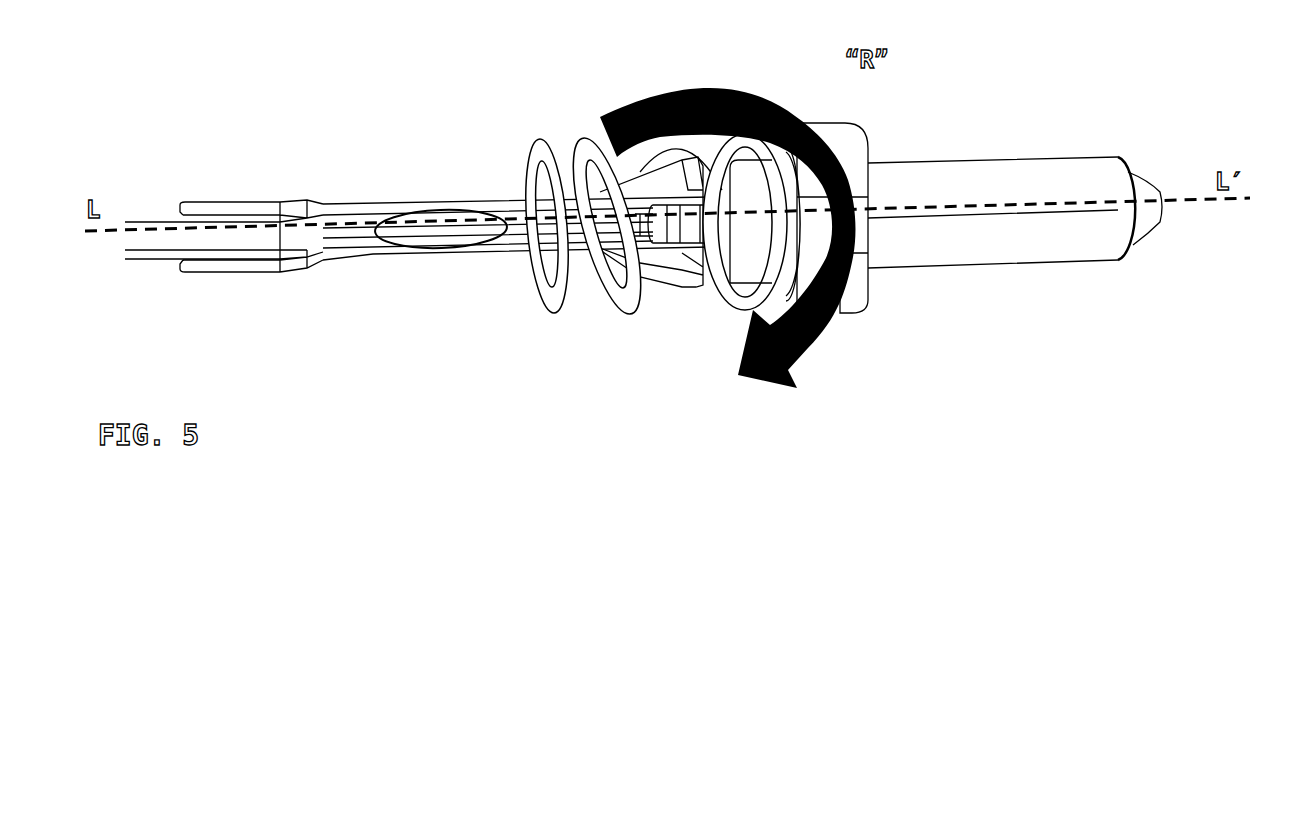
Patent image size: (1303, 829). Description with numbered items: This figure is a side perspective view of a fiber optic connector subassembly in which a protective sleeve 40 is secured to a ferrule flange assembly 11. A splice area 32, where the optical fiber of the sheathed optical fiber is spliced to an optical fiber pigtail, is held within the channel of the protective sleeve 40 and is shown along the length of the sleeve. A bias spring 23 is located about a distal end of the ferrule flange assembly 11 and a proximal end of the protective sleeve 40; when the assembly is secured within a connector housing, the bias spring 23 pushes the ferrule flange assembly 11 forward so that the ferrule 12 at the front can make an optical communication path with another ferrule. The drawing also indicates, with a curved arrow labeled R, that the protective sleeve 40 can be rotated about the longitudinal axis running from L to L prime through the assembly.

The ferrule flange assembly 11 is at (876, 295).
The ferrule 12 is at (1015, 212).
The bias spring 23 is at (581, 140).
The splice area 32 is at (446, 258).
The protective sleeve 40 is at (278, 269).